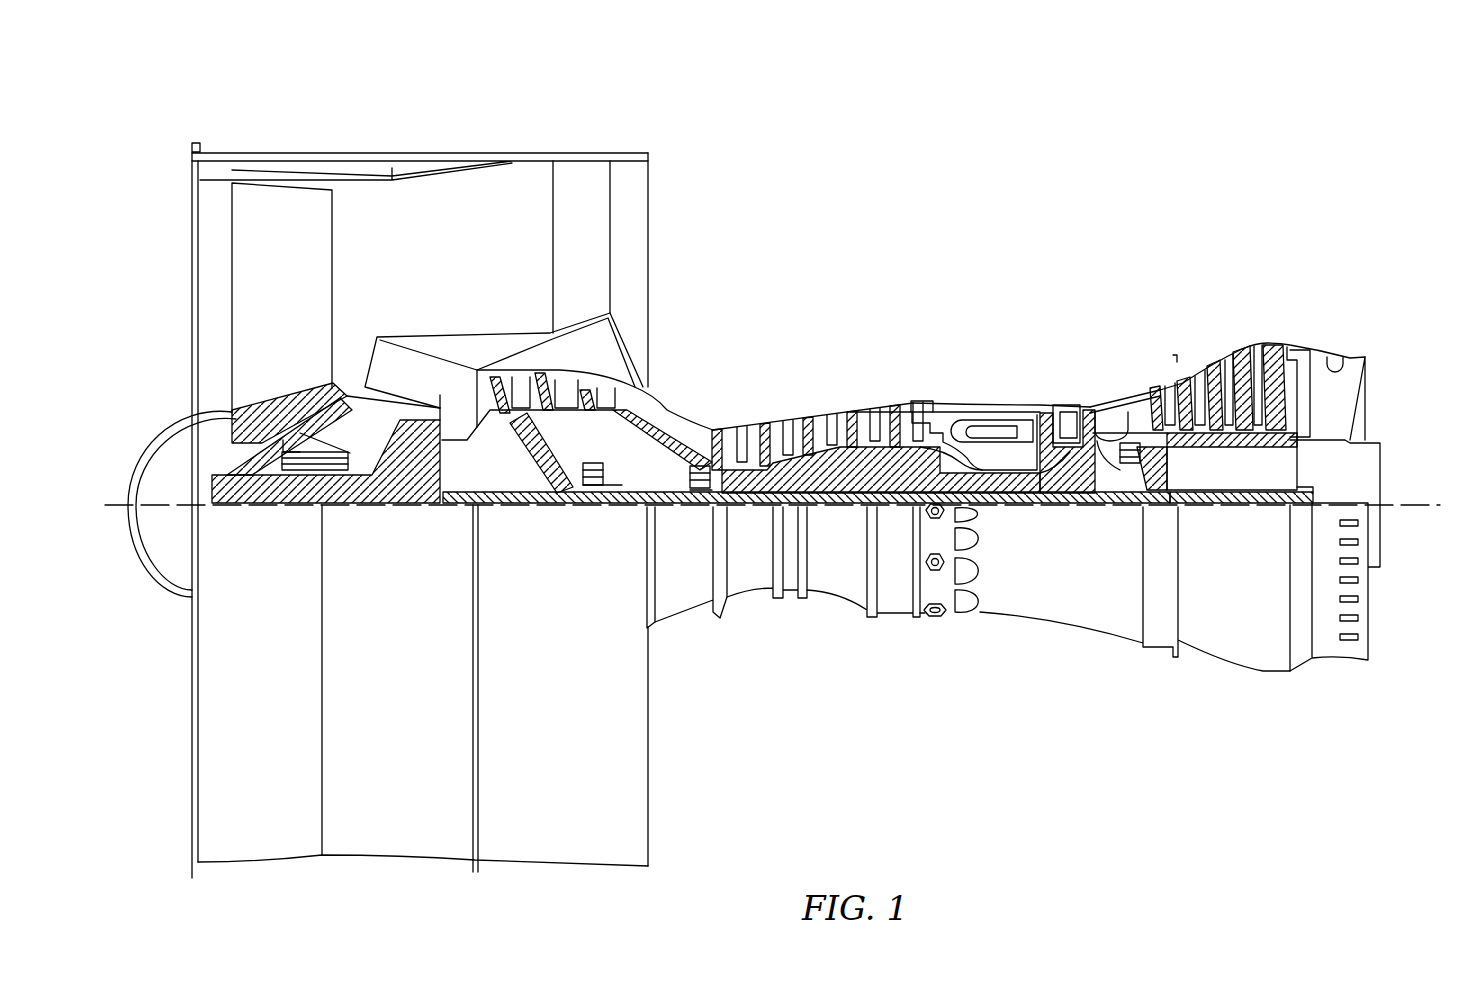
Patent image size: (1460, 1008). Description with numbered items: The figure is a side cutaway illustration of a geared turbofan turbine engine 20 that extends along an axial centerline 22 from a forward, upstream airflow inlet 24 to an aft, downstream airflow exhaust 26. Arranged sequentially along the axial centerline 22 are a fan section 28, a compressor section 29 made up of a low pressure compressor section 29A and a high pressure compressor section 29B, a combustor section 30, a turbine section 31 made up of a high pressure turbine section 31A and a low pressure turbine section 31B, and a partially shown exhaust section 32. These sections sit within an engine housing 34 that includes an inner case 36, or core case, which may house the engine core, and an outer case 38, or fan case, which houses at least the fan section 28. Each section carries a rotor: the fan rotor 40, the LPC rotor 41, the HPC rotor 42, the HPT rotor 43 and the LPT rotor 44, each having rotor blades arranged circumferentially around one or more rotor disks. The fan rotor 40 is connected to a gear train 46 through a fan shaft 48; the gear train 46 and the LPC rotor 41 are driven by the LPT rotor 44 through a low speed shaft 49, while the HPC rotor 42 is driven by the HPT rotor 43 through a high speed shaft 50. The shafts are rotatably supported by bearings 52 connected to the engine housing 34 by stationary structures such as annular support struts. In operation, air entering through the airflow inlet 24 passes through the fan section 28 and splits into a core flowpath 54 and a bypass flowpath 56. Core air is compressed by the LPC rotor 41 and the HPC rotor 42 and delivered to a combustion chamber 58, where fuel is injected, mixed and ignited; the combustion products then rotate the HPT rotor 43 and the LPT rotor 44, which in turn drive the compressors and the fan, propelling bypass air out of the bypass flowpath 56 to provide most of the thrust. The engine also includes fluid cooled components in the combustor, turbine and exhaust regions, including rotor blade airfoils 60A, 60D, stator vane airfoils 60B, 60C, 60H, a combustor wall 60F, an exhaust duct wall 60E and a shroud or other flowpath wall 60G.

The turbofan turbine engine 20 is at (160, 133).
The axial centerline 22 is at (1440, 512).
The airflow inlet 24 is at (192, 236).
The airflow exhaust 26 is at (1372, 392).
The fan section 28 is at (197, 130).
The compressor section 29 is at (463, 63).
The low pressure compressor section 29A is at (648, 113).
The high pressure compressor section 29B is at (890, 292).
The combustor section 30 is at (915, 292).
The turbine section 31 is at (1037, 217).
The high pressure turbine section 31A is at (1122, 292).
The low pressure turbine section 31B is at (1323, 292).
The exhaust section 32 is at (1365, 293).
The engine housing 34 is at (675, 637).
The inner case 36 is at (893, 618).
The outer case 38 is at (597, 866).
The fan rotor 40 is at (232, 424).
The LPC rotor 41 is at (545, 442).
The HPC rotor 42 is at (833, 462).
The HPT rotor 43 is at (1065, 480).
The LPT rotor 44 is at (1232, 445).
The gear train 46 is at (425, 497).
The fan shaft 48 is at (268, 497).
The low speed shaft 49 is at (1238, 503).
The high speed shaft 50 is at (997, 482).
The bearings 52 is at (290, 471).
The core flowpath 54 is at (669, 424).
The bypass flowpath 56 is at (437, 269).
The combustion chamber 58 is at (977, 412).
The rotor blade airfoil 60A is at (1067, 427).
The stator vane airfoil 60B is at (1077, 447).
The stator vane airfoil 60C is at (1163, 418).
The rotor blade airfoil 60D is at (1220, 447).
The exhaust duct wall 60E is at (1347, 362).
The combustor wall 60F is at (987, 433).
The shroud or other flowpath wall 60G is at (1130, 440).
The stator vane airfoil 60H is at (1118, 425).